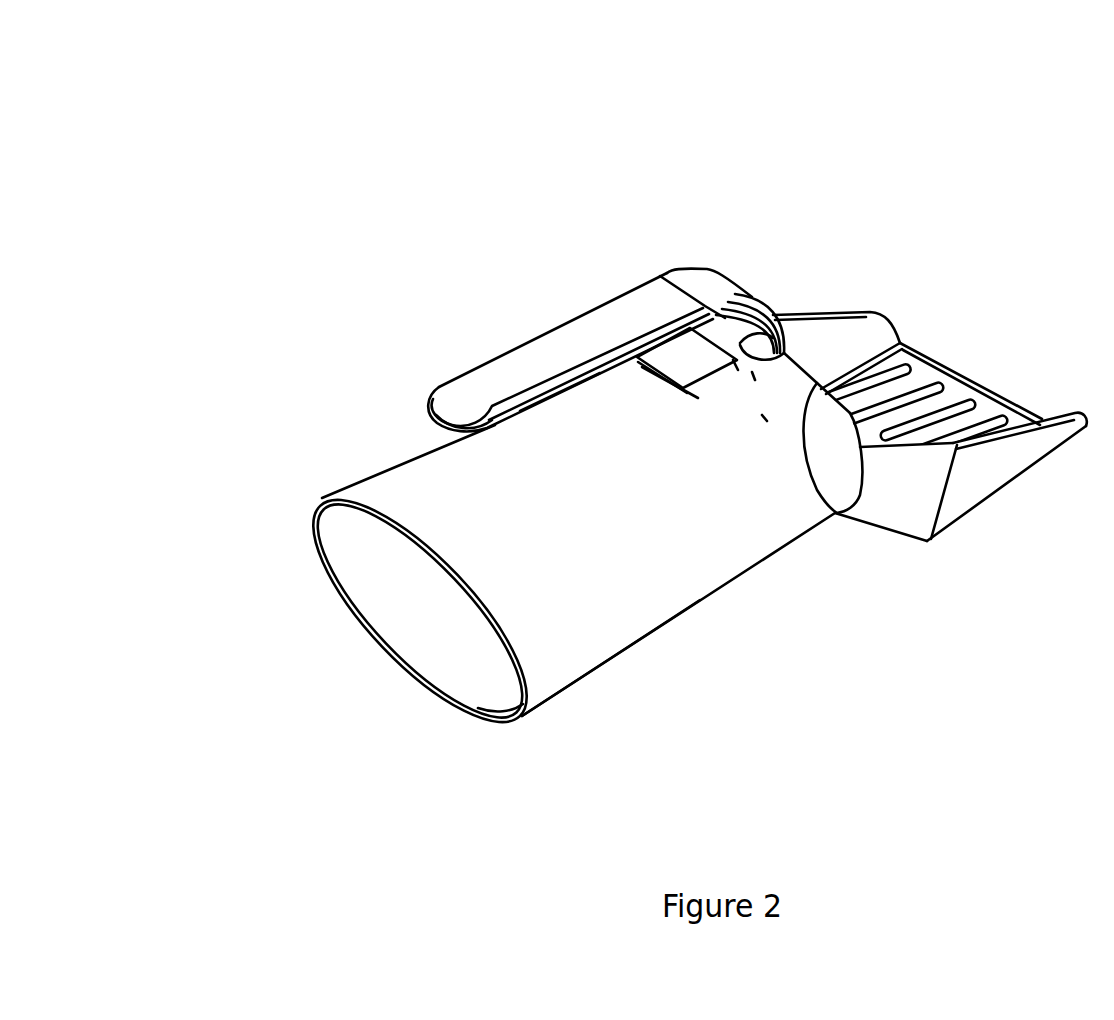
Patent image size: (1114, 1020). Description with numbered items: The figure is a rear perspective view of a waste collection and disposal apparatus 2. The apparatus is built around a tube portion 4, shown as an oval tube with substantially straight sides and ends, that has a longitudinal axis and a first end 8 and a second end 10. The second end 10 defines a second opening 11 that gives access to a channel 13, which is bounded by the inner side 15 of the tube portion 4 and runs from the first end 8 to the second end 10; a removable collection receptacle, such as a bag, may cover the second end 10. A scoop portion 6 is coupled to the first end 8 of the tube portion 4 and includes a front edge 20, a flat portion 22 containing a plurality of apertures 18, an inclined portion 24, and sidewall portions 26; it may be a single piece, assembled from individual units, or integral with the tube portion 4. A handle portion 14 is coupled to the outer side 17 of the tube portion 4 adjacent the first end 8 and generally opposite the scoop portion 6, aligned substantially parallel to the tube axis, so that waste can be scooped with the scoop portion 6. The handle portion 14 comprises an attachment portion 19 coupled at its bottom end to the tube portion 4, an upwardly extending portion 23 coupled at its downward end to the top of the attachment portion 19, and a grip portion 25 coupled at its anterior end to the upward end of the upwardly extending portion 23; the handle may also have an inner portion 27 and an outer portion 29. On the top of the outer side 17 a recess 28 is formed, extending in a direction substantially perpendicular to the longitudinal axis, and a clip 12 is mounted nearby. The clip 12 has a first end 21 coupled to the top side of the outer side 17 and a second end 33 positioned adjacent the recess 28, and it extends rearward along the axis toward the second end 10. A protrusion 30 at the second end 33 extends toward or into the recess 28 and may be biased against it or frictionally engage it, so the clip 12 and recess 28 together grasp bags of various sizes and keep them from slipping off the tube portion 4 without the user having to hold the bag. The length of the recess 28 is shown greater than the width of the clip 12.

The waste collection and disposal apparatus 2 is at (213, 117).
The tube portion 4 is at (598, 735).
The scoop portion 6 is at (921, 269).
The first end 8 is at (837, 513).
The second end 10 is at (318, 500).
The second opening 11 is at (476, 700).
The clip 12 is at (680, 343).
The channel 13 is at (414, 598).
The handle portion 14 is at (513, 255).
The inner side 15 is at (335, 528).
The outer side 17 is at (656, 624).
The apertures 18 is at (970, 397).
The attachment portion 19 is at (733, 323).
The front edge 20 is at (948, 357).
The first end 21 is at (810, 327).
The flat portion 22 is at (1017, 405).
The upwardly extending portion 23 is at (690, 275).
The inclined portion 24 is at (903, 517).
The grip portion 25 is at (532, 355).
The sidewall portions 26 is at (1003, 473).
The inner portion 27 is at (520, 413).
The recess 28 is at (695, 378).
The outer portion 29 is at (490, 420).
The protrusion 30 is at (690, 380).
The second end 33 is at (733, 365).